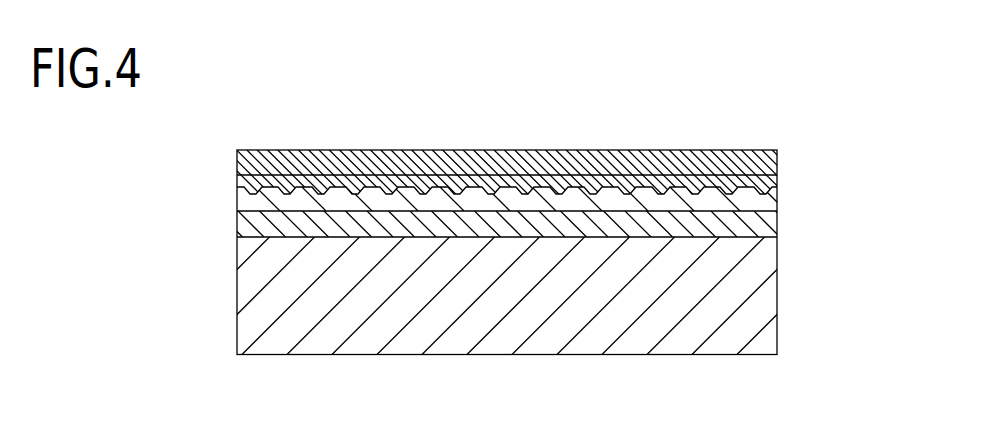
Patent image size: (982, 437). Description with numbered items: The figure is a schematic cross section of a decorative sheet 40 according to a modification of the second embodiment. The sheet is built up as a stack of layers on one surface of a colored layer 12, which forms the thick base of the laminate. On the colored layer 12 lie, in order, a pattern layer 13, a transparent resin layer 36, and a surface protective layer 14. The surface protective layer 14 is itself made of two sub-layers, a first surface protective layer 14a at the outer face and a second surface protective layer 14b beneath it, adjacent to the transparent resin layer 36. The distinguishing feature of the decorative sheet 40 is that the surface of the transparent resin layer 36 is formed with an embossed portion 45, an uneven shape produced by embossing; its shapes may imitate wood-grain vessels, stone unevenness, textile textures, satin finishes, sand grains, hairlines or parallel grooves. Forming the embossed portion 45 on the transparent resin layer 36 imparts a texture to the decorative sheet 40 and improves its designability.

The colored layer 12 is at (763, 289).
The pattern layer 13 is at (763, 224).
The transparent resin layer 36 is at (770, 202).
The surface protective layer 14 is at (847, 128).
The first surface protective layer 14a is at (772, 154).
The second surface protective layer 14b is at (770, 179).
The embossed portion 45 is at (630, 184).
The decorative sheet 40 is at (228, 138).